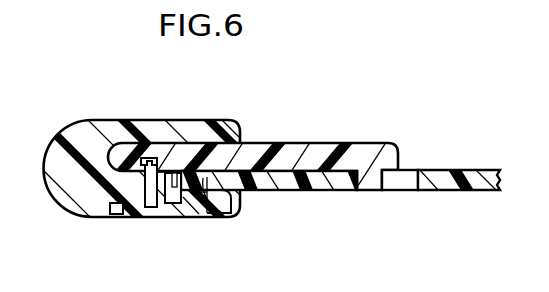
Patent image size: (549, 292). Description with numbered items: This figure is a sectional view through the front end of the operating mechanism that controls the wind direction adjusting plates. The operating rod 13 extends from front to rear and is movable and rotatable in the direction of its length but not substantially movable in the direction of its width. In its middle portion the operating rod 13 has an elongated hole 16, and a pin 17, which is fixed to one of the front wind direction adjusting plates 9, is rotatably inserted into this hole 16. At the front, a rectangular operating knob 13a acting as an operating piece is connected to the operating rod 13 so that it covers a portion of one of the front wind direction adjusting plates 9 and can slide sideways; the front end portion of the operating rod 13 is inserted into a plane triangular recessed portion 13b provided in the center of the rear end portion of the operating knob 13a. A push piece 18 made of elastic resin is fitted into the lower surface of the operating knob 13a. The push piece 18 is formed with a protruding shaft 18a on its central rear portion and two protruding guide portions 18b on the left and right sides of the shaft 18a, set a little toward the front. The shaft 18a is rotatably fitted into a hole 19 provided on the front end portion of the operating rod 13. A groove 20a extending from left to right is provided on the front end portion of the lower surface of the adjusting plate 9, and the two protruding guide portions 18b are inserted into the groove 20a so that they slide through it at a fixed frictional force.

The front wind direction adjusting plate 9 is at (300, 147).
The operating rod 13 is at (467, 171).
The operating knob 13a is at (88, 121).
The recessed portion 13b is at (247, 193).
The elongated hole 16 is at (417, 176).
The pin 17 is at (367, 189).
The push piece 18 is at (158, 218).
The shaft 18a is at (192, 218).
The protruding guide portion 18b is at (120, 216).
The hole 19 is at (215, 218).
The groove 20a is at (148, 157).